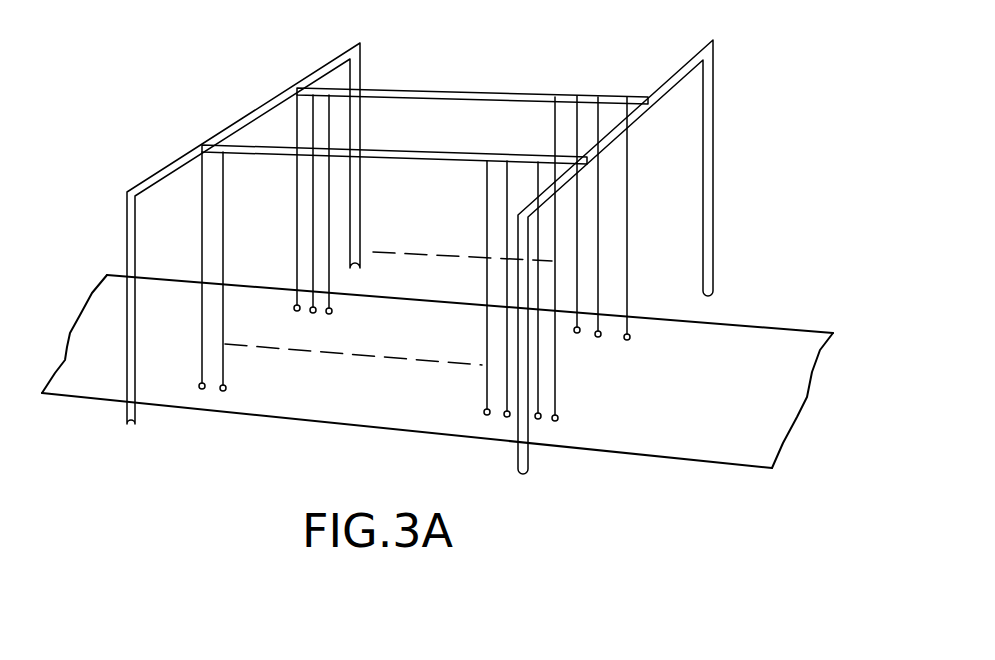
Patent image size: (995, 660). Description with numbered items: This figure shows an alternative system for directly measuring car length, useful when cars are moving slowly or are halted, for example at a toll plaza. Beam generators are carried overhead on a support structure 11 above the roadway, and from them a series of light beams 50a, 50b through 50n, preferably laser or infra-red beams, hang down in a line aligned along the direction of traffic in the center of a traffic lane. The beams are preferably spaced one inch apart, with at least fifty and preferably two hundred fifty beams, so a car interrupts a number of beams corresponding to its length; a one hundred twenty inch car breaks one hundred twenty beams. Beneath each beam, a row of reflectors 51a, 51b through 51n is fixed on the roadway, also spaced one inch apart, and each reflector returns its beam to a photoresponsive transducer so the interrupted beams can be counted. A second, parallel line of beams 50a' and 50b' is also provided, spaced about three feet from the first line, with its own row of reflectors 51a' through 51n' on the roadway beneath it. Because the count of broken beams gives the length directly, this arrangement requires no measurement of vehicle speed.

The support structure 11 is at (357, 72).
The light beam 50a is at (662, 215).
The light beam 50b is at (616, 180).
The light beam 50n is at (297, 112).
The light beam of second line 50a' is at (388, 266).
The light beam of second line 50b' is at (589, 290).
The reflector 51a is at (653, 306).
The reflector 51b is at (600, 330).
The reflector 51n is at (267, 261).
The reflector of second line 51a' is at (575, 464).
The reflector of second line 51n' is at (188, 432).